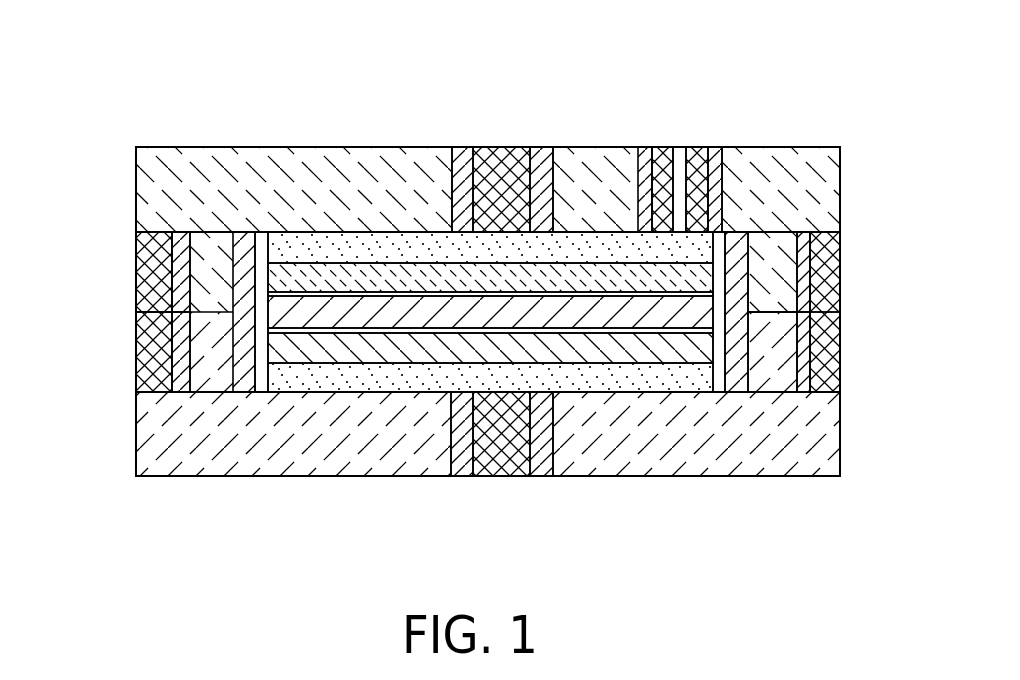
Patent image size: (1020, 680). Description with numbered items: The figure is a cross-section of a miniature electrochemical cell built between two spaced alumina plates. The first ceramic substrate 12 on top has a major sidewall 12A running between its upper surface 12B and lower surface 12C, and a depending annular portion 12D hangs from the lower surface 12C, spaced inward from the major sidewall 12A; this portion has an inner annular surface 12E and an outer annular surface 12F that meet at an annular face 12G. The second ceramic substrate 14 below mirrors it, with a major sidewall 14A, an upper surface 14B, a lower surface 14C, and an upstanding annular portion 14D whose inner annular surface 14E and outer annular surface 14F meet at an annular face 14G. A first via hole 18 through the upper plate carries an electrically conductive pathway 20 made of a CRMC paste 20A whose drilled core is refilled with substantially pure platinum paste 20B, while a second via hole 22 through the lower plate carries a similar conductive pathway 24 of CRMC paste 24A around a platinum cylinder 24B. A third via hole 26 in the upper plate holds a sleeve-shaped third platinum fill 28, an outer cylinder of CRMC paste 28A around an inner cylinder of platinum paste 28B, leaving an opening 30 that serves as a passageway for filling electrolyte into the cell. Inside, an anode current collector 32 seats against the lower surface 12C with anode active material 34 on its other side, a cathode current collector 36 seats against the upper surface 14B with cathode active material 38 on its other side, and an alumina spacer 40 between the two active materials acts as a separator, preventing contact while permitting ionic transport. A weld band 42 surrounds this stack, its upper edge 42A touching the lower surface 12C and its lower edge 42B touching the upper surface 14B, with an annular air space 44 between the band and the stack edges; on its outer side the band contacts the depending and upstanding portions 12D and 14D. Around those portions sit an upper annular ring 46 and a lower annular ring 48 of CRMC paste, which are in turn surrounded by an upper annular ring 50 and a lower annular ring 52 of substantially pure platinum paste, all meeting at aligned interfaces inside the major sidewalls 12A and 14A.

The first ceramic substrate 12 is at (243, 162).
The major sidewall 12A is at (137, 192).
The upper surface 12B is at (182, 147).
The lower surface 12C is at (180, 255).
The depending annular portion 12D is at (777, 252).
The inner annular surface 12E is at (798, 170).
The outer annular surface 12F is at (799, 260).
The annular face 12G is at (788, 312).
The second ceramic substrate 14 is at (193, 450).
The major sidewall 14A is at (150, 440).
The upper surface 14B is at (150, 383).
The lower surface 14C is at (163, 478).
The upstanding annular portion 14D is at (769, 368).
The inner annular surface 14E is at (742, 355).
The outer annular surface 14F is at (800, 350).
The annular face 14G is at (788, 313).
The first via hole 18 is at (553, 147).
The electrically conductive pathway 20 is at (504, 127).
The CRMC paste 20A is at (540, 147).
The platinum paste 20B is at (488, 147).
The second via hole 22 is at (452, 477).
The conductive pathway 24 is at (497, 500).
The CRMC paste 24A is at (545, 477).
The platinum paste 24B is at (513, 477).
The third via hole 26 is at (723, 147).
The third platinum fill 28 is at (698, 127).
The CRMC paste 28A is at (718, 147).
The platinum paste 28B is at (662, 147).
The opening 30 is at (682, 147).
The anode current collector 32 is at (342, 245).
The anode active material 34 is at (395, 272).
The cathode current collector 36 is at (342, 378).
The cathode active material 38 is at (318, 352).
The alumina spacer 40 is at (302, 302).
The weld band 42 is at (243, 305).
The upper edge 42A is at (246, 232).
The lower edge 42B is at (247, 397).
The annular air space 44 is at (265, 378).
The upper annular ring of CRMC paste 46 is at (148, 255).
The lower annular ring of CRMC paste 48 is at (180, 368).
The upper annular ring of platinum paste 50 is at (150, 274).
The lower annular ring of platinum paste 52 is at (148, 343).